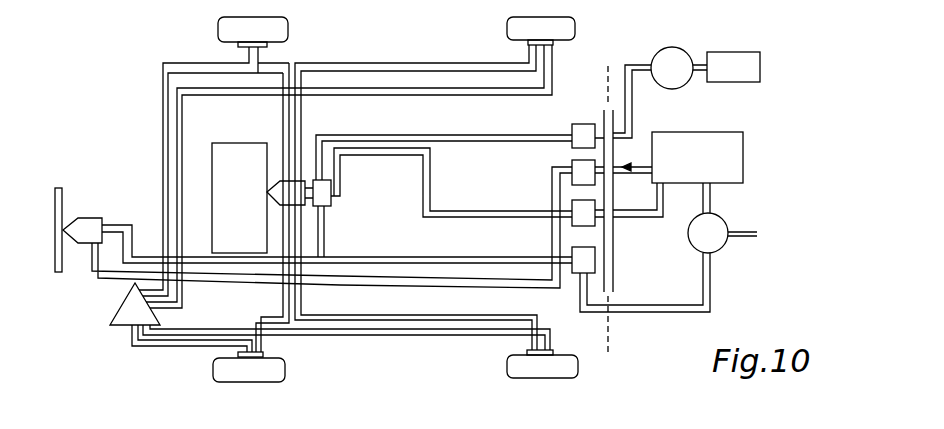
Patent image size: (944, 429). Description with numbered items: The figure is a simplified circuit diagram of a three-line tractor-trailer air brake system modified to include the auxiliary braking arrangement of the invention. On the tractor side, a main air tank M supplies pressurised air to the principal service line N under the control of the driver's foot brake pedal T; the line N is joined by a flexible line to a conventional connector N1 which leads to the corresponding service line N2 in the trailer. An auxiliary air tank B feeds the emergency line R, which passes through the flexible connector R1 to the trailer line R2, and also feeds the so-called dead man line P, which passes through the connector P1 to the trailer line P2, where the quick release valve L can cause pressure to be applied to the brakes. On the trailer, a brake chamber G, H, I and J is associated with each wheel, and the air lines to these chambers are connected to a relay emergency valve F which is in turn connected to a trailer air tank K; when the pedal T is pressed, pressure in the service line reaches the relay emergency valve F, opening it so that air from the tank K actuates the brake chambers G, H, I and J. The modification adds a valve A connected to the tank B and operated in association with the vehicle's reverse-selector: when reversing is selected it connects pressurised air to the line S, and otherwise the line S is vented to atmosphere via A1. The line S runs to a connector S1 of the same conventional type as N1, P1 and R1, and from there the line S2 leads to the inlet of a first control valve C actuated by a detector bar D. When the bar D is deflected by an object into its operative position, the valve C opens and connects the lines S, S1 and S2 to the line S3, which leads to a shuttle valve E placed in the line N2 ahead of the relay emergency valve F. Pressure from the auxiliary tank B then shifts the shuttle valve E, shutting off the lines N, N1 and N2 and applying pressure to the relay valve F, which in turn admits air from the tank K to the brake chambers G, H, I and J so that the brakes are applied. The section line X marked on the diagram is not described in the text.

The brake chamber G is at (238, 45).
The brake chamber H is at (553, 42).
The brake chamber I is at (264, 355).
The brake chamber J is at (553, 352).
The quick release valve L is at (143, 323).
The detector bar D is at (63, 200).
The first control valve C is at (88, 226).
The line S2 is at (442, 258).
The line P2 is at (223, 287).
The trailer air tank K is at (250, 220).
The relay emergency valve F is at (270, 190).
The shuttle valve E is at (331, 192).
The line S3 is at (327, 212).
The line N2 is at (492, 135).
The line R2 is at (468, 213).
The connector N1 is at (580, 129).
The connector P1 is at (572, 166).
The flexible connector R1 is at (573, 224).
The connector S1 is at (576, 280).
The section line / manifold X is at (607, 214).
The line N is at (640, 67).
The foot brake pedal T is at (678, 64).
The main air tank M is at (753, 60).
The line P is at (623, 156).
The auxiliary air tank B is at (735, 140).
The line R is at (633, 218).
The valve A is at (717, 243).
The vent to atmosphere A1 is at (750, 236).
The line S is at (655, 306).